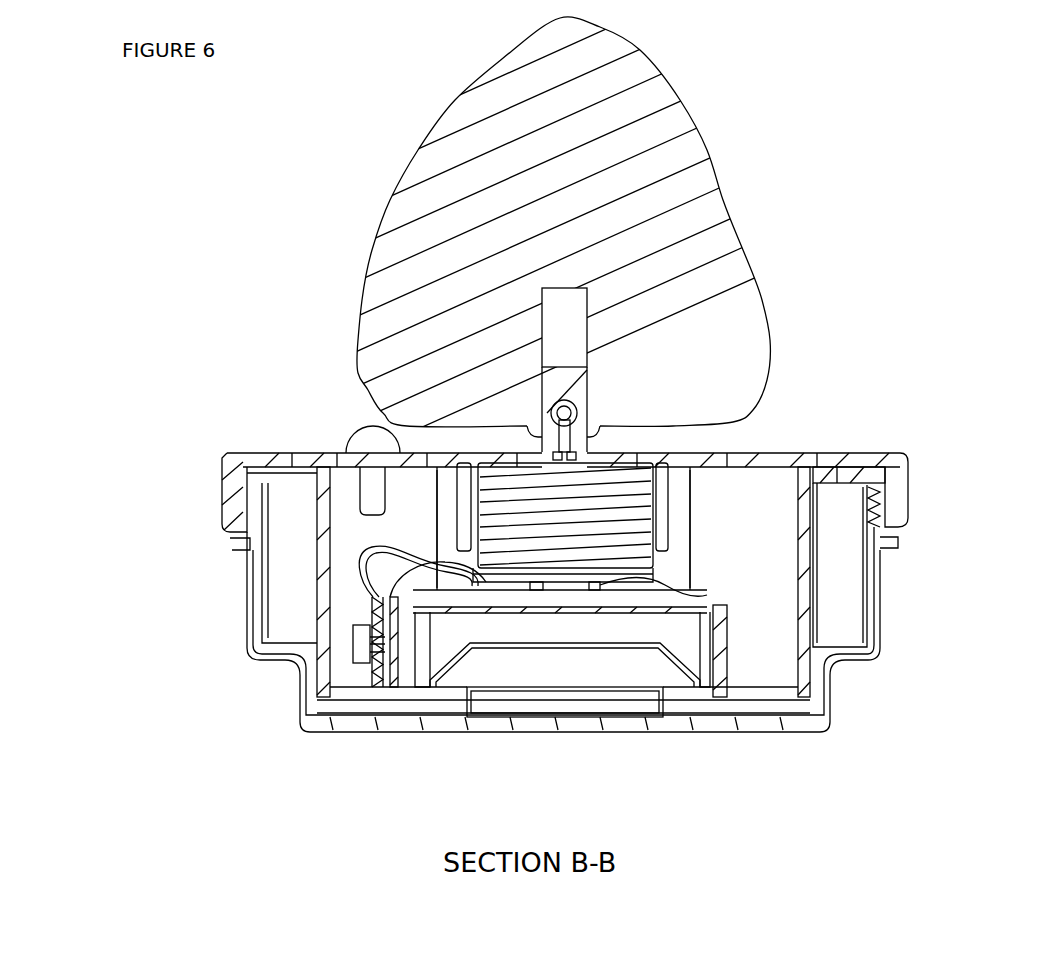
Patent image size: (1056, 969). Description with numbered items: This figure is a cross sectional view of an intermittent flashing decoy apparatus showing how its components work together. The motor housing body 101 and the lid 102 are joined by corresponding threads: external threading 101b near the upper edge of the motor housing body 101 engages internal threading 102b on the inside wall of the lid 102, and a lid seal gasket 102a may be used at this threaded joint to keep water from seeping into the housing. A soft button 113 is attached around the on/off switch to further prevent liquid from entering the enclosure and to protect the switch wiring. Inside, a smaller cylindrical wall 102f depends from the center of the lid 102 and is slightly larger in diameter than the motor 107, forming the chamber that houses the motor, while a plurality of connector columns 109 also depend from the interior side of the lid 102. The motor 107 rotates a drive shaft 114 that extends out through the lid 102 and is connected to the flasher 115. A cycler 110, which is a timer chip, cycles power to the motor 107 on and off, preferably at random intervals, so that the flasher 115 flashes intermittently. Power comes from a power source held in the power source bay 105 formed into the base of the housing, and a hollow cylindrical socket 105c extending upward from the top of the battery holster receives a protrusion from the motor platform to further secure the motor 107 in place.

The motor housing body 101 is at (248, 588).
The external threading 101b is at (870, 526).
The lid 102 is at (320, 588).
The lid seal gasket 102a is at (350, 500).
The internal threading 102b is at (885, 487).
The smaller cylindrical wall 102f is at (660, 538).
The power source bay 105 is at (539, 657).
The hollow cylindrical socket 105c is at (583, 603).
The motor 107 is at (563, 573).
The connector columns 109 is at (680, 500).
The cycler 110 is at (357, 657).
The soft button 113 is at (352, 432).
The drive shaft 114 is at (567, 446).
The flasher 115 is at (660, 95).